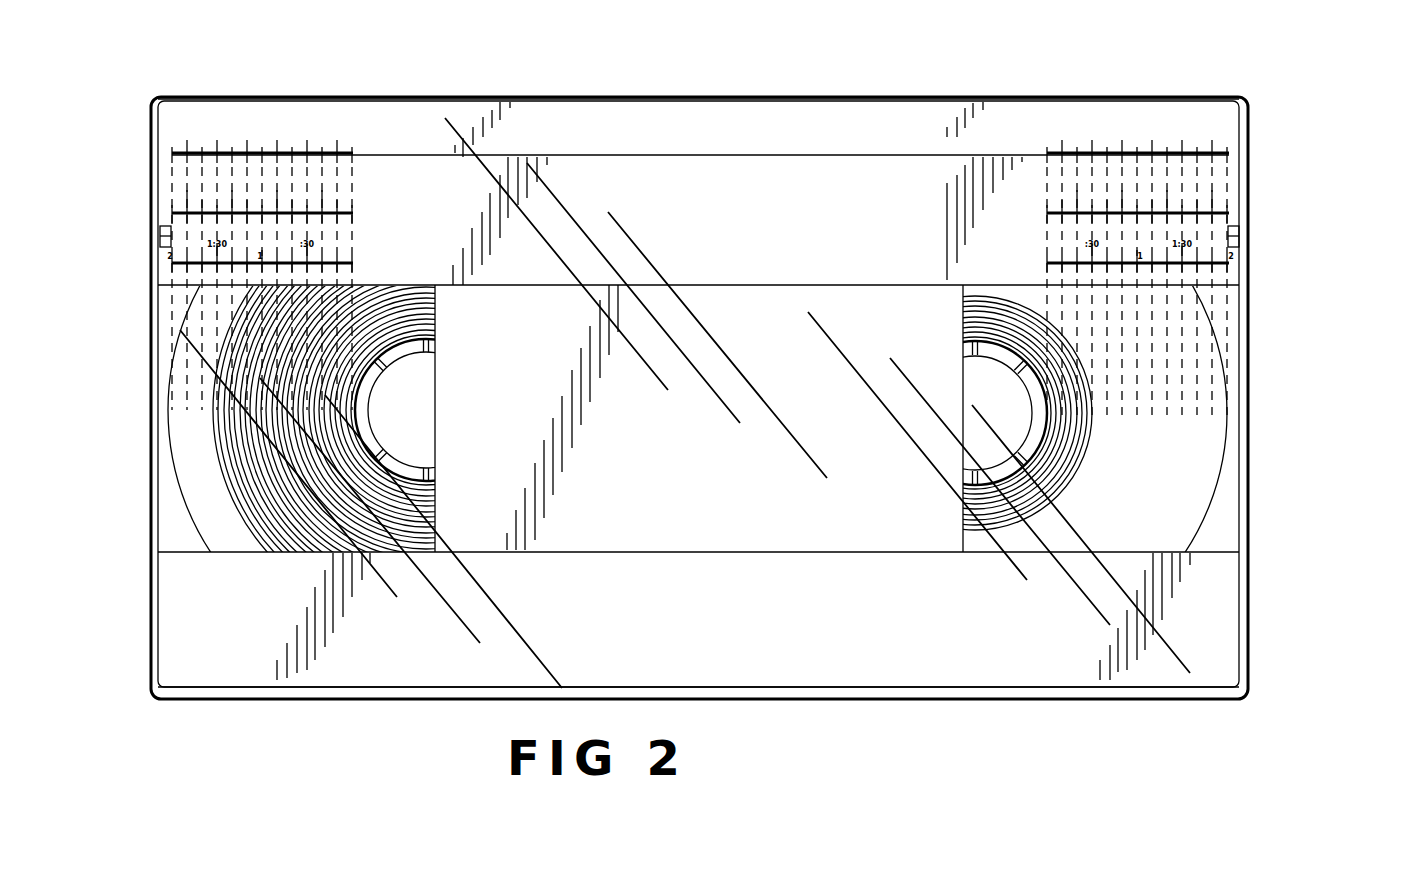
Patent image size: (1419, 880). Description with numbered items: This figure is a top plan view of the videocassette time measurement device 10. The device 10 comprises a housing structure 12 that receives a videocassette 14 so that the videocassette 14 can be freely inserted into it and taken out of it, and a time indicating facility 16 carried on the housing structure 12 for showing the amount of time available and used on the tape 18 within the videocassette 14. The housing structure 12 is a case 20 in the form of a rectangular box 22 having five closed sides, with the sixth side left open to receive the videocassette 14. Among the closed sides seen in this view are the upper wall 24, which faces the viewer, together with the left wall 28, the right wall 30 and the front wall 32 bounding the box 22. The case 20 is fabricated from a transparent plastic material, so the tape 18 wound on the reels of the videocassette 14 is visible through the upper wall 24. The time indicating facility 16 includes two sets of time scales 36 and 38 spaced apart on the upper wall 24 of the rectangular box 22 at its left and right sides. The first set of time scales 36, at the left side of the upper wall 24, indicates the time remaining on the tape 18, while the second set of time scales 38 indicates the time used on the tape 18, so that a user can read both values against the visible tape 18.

The videocassette time measurement device 10 is at (1326, 174).
The housing structure 12 is at (781, 96).
The videocassette 14 is at (907, 121).
The time indicating facility 16 is at (358, 149).
The tape 18 is at (252, 553).
The case 20 is at (632, 96).
The rectangular box 22 is at (1201, 98).
The upper wall 24 is at (852, 681).
The left wall 28 is at (150, 136).
The right wall 30 is at (1250, 110).
The front wall 32 is at (946, 700).
The first set of time scales 36 is at (359, 212).
The second set of time scales 38 is at (1041, 223).